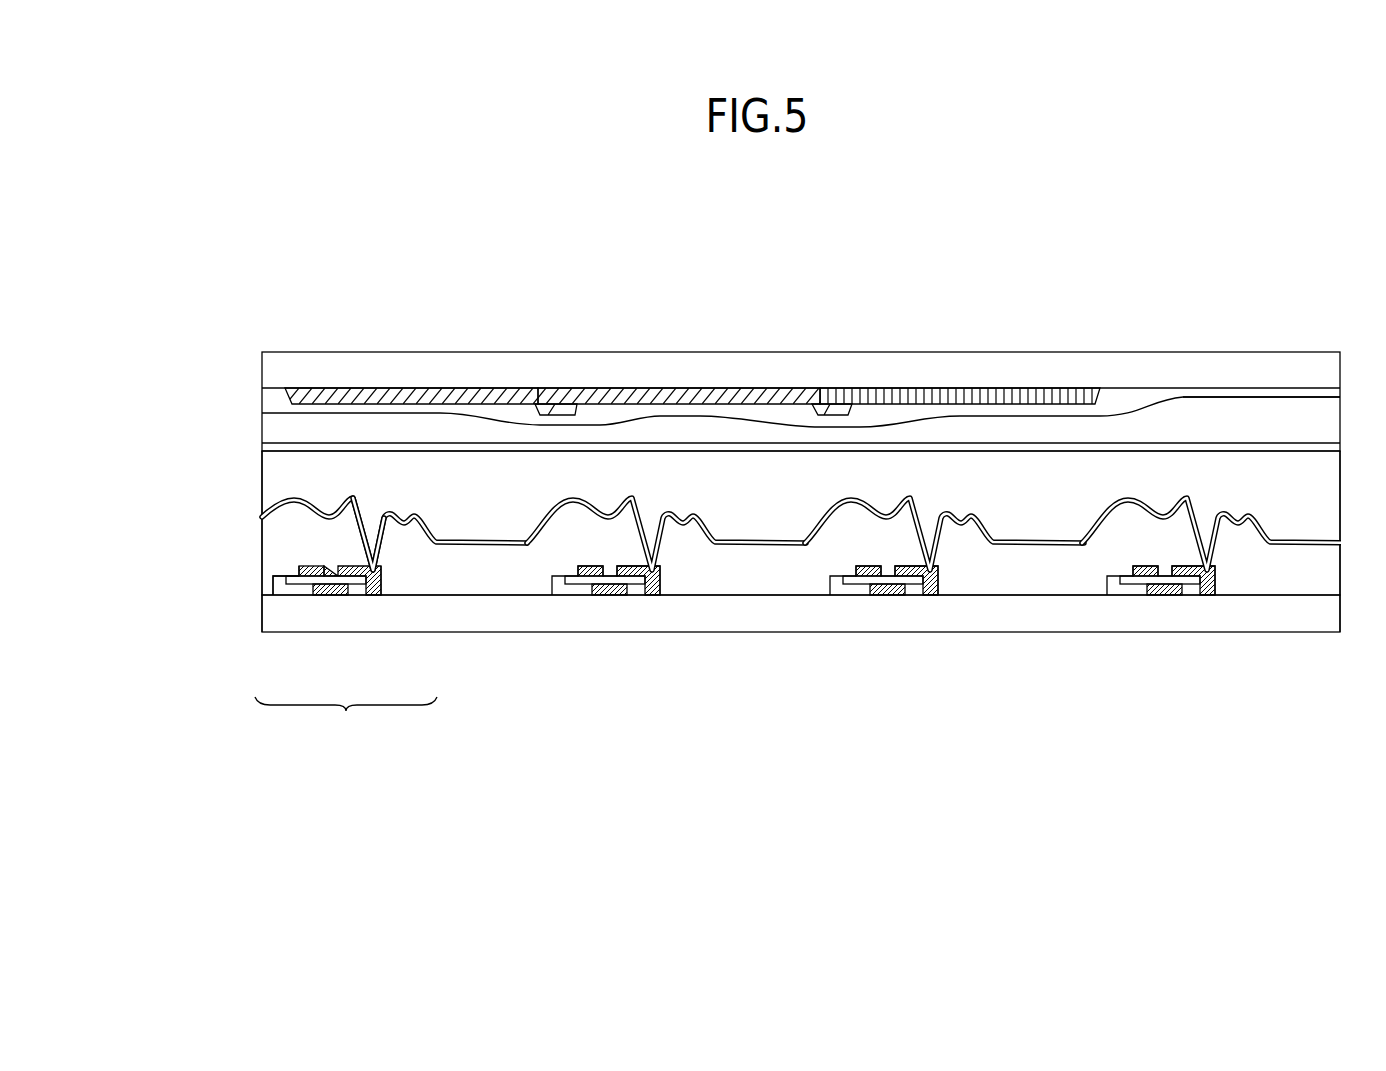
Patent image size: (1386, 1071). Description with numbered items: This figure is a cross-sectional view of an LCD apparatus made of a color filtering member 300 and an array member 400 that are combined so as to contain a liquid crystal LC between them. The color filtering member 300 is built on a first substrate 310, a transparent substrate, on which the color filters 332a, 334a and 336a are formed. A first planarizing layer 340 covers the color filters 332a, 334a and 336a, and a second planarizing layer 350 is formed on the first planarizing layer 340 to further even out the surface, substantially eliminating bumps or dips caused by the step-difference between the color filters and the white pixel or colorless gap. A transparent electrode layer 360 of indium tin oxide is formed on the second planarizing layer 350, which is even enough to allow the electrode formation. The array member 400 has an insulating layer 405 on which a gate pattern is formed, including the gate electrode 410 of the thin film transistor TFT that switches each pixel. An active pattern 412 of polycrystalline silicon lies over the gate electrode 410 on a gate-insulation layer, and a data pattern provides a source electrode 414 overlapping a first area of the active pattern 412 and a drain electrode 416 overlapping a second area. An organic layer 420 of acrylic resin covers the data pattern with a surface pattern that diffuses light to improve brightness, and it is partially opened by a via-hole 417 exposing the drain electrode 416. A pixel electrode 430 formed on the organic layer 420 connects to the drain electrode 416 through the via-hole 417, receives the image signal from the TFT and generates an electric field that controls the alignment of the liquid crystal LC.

The color filtering member 300 is at (243, 368).
The first substrate 310 is at (1290, 365).
The color filter 332a is at (506, 393).
The color filter 334a is at (737, 393).
The color filter 336a is at (958, 393).
The first planarizing layer 340 is at (1128, 397).
The second planarizing layer 350 is at (1222, 412).
The transparent electrode layer 360 is at (262, 443).
The liquid crystal LC is at (258, 468).
The array member 400 is at (243, 603).
The insulating layer 405 is at (720, 632).
The gate electrode 410 is at (330, 595).
The active pattern 412 is at (302, 595).
The source electrode 414 is at (278, 595).
The drain electrode 416 is at (378, 595).
The via-hole 417 is at (380, 518).
The organic layer 420 is at (477, 583).
The pixel electrode 430 is at (522, 545).
The thin film transistor TFT is at (346, 715).